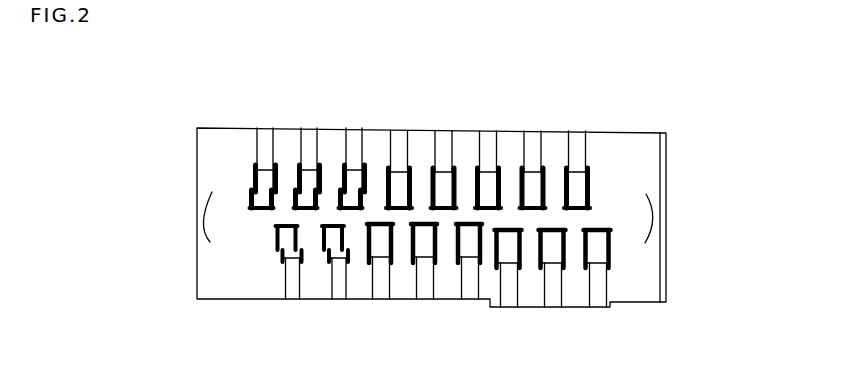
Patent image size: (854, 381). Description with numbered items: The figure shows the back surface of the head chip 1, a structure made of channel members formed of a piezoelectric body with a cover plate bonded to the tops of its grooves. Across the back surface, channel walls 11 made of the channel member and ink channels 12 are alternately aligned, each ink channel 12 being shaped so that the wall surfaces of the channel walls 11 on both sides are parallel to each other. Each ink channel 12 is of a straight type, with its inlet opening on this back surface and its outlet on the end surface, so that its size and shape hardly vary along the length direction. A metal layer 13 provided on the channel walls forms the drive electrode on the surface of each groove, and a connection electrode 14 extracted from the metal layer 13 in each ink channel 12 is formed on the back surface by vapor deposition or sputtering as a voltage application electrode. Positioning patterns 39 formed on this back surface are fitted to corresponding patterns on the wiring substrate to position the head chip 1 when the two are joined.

The head chip 1 is at (665, 170).
The channel wall 11 is at (285, 182).
The ink channel 12 is at (317, 185).
The metal layer 13 is at (355, 185).
The connection electrode 14 is at (263, 133).
The positioning pattern 39 is at (204, 227).